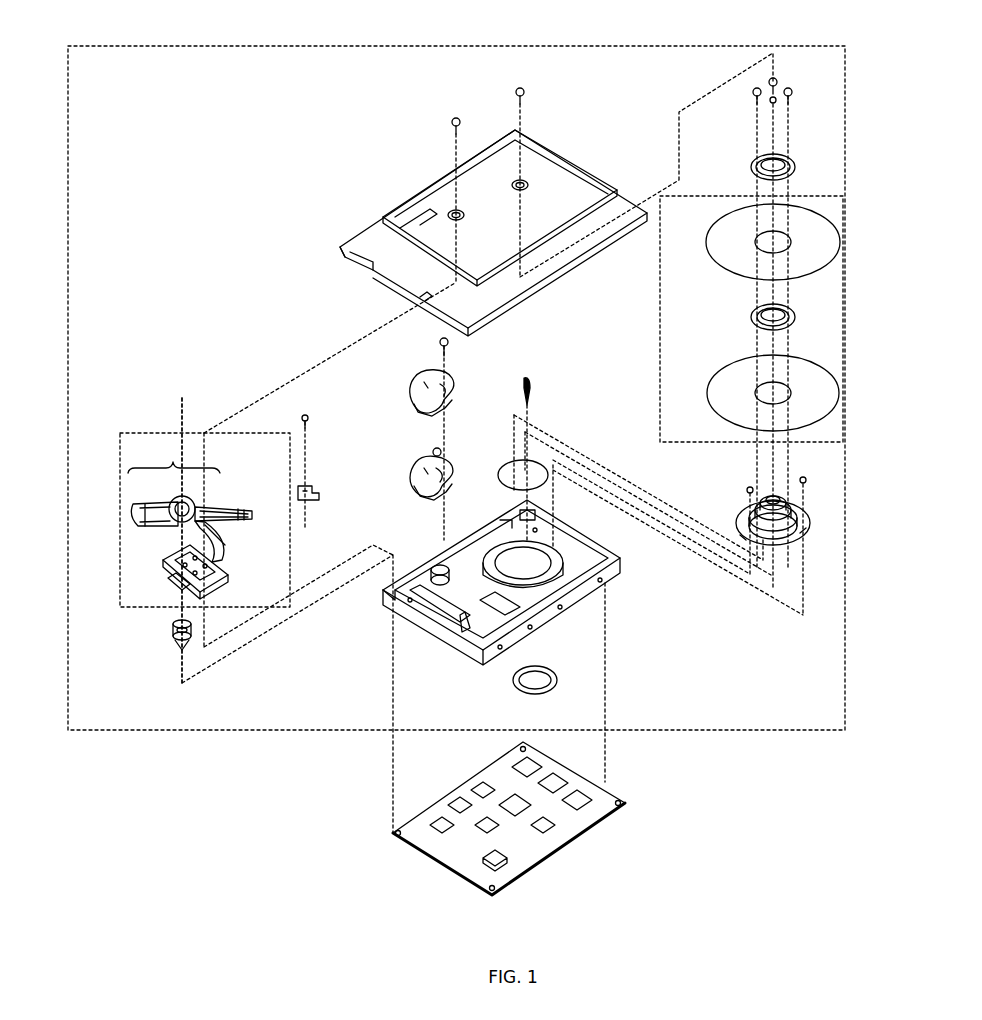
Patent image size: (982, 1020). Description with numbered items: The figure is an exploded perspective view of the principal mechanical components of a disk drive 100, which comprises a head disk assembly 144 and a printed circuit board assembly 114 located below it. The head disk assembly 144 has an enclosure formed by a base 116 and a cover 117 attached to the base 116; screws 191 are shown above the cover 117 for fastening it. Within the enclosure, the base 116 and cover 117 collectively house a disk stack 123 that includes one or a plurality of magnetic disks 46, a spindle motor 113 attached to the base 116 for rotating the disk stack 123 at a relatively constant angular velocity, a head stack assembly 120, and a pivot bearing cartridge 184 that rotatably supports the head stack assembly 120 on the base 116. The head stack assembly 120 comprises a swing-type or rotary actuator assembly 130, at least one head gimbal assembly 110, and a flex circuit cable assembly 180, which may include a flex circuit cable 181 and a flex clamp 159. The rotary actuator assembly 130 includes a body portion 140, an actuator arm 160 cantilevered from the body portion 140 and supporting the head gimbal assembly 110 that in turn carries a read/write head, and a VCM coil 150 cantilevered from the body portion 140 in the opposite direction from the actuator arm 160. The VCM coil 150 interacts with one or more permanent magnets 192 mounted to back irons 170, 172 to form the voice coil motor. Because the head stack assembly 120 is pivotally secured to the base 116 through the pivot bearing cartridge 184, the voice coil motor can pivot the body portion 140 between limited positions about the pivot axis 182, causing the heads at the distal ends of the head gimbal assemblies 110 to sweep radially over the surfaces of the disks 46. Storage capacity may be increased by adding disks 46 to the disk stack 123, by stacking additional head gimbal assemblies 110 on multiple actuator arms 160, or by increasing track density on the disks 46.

The disk drive 100 is at (210, 30).
The head disk assembly 144 is at (742, 734).
The cover 117 is at (407, 197).
The cover screws 191 is at (456, 118).
The disk stack 123 is at (717, 260).
The magnetic disk 46 is at (722, 272).
The spindle motor 113 is at (745, 520).
The base 116 is at (608, 585).
The back iron 170 is at (416, 388).
The back iron 172 is at (434, 450).
The permanent magnet 192 is at (420, 470).
The head stack assembly 120 is at (183, 533).
The pivot axis 182 is at (196, 405).
The rotary actuator assembly 130 is at (175, 466).
The head gimbal assembly 110 is at (180, 513).
The VCM coil 150 is at (138, 536).
The body portion 140 is at (190, 503).
The actuator arm 160 is at (218, 522).
The flex circuit cable assembly 180 is at (203, 572).
The flex circuit 181 is at (224, 562).
The flex clamp 159 is at (178, 578).
The pivot bearing cartridge 184 is at (172, 637).
The printed circuit board assembly 114 is at (560, 850).